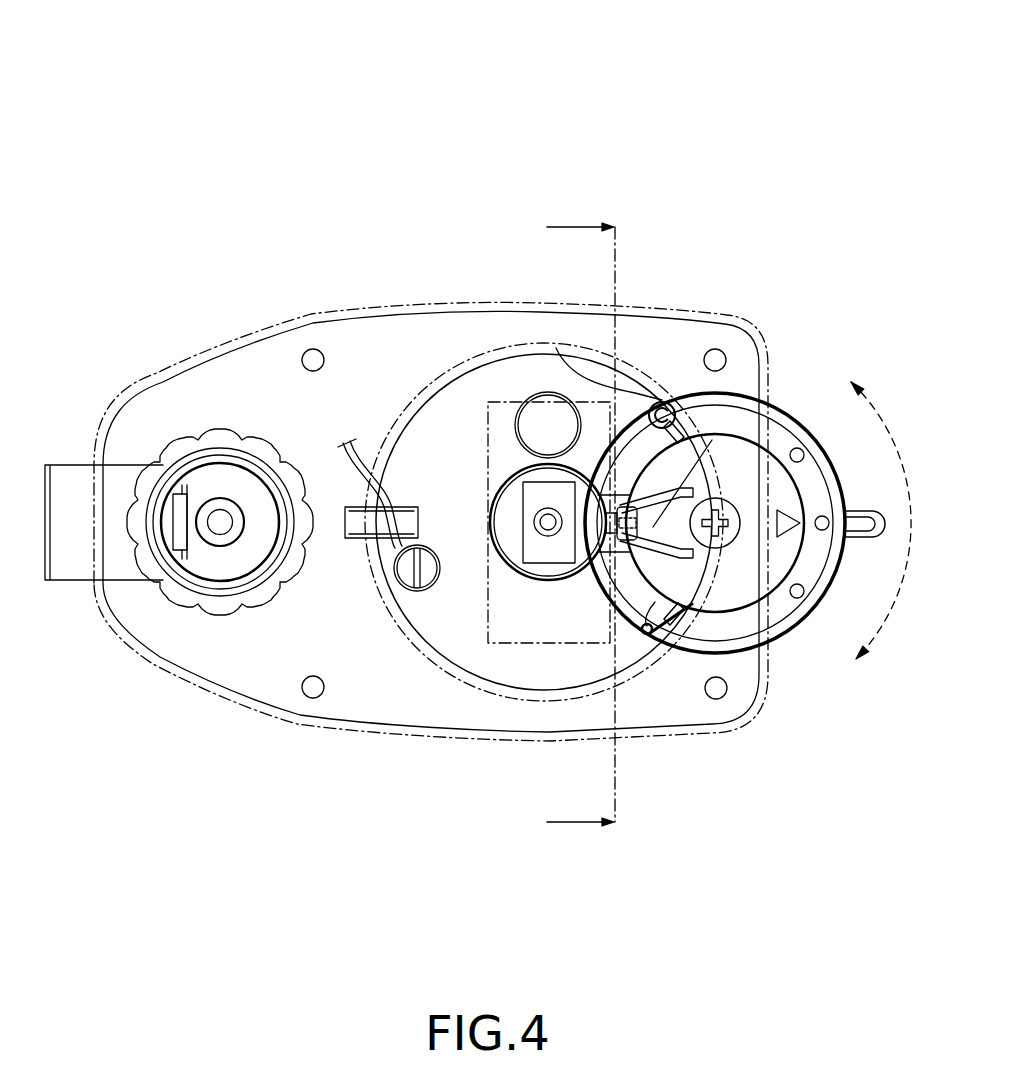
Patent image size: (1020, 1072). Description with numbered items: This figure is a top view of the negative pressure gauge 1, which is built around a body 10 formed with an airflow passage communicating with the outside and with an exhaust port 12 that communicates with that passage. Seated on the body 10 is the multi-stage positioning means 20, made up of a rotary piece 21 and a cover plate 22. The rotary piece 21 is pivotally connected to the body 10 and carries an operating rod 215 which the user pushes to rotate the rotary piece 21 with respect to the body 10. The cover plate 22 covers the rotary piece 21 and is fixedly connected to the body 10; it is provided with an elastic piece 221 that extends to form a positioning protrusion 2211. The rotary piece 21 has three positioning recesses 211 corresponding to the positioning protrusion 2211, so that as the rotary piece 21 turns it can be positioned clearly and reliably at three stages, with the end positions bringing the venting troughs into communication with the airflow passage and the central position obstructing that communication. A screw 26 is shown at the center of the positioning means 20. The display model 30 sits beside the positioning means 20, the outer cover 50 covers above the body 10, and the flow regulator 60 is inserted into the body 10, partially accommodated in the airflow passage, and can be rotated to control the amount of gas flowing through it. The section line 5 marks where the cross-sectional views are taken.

The negative pressure gauge 1 is at (290, 54).
The body 10 is at (400, 700).
The exhaust port 12 is at (70, 482).
The multi-stage positioning means 20 is at (748, 534).
The rotary piece 21 is at (633, 392).
The cover plate 22 is at (733, 403).
The center screw 26 is at (737, 527).
The display model 30 is at (497, 402).
The outer cover 50 is at (365, 313).
The flow regulator 60 is at (235, 441).
The positioning recesses 211 is at (640, 580).
The operating rod 215 is at (848, 548).
The elastic piece 221 is at (735, 417).
The positioning protrusion 2211 is at (636, 402).
The section line 5- 5 is at (569, 526).